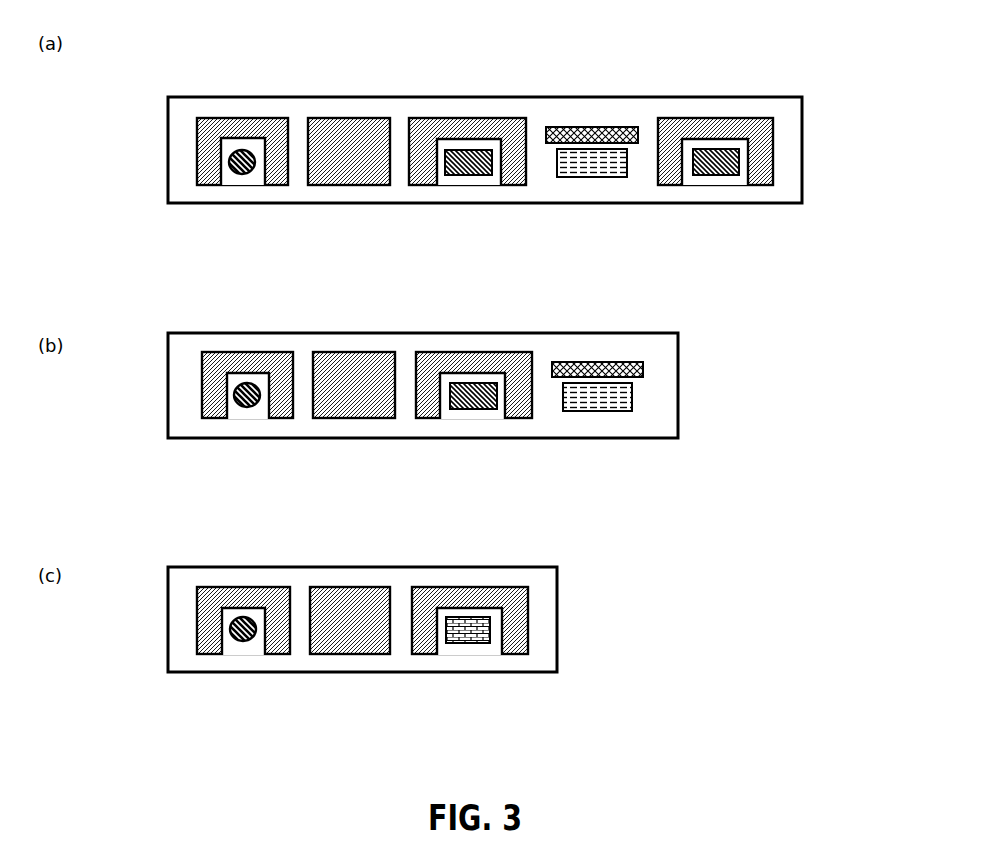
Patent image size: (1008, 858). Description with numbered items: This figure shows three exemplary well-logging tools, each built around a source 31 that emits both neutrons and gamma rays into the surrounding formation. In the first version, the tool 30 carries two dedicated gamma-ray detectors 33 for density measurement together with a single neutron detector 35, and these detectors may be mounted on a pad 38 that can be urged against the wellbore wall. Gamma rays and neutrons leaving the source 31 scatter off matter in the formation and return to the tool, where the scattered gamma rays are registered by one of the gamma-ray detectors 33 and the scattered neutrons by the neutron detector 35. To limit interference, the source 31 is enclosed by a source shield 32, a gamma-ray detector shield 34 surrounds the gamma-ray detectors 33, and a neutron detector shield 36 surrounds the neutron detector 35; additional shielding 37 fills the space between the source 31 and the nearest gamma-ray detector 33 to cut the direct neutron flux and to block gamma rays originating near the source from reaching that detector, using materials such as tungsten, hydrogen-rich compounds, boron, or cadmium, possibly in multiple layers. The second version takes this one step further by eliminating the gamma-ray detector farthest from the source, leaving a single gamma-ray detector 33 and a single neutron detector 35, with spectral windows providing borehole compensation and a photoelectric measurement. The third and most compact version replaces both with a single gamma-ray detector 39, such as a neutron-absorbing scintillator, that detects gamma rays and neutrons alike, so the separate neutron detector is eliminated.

In FIG. 3A, the tool 30 is at (150, 125).
In FIG. 3A, the source 31 is at (238, 168).
In FIG. 3A, the source shield 32 is at (270, 135).
In FIG. 3A, the gamma-ray detector 33 is at (706, 166).
In FIG. 3B, the gamma-ray detector 33 is at (474, 405).
In FIG. 3A, the gamma-ray detector shield 34 is at (708, 122).
In FIG. 3A, the neutron detector 35 is at (583, 167).
In FIG. 3B, the neutron detector 35 is at (607, 398).
In FIG. 3A, the neutron detector shield 36 is at (571, 127).
In FIG. 3B, the neutron detector shield 36 is at (610, 362).
In FIG. 3A, the shielding 37 is at (350, 154).
In FIG. 3A, the pad 38 is at (786, 140).
In FIG. 3C, the gamma-ray detector 39 is at (465, 643).